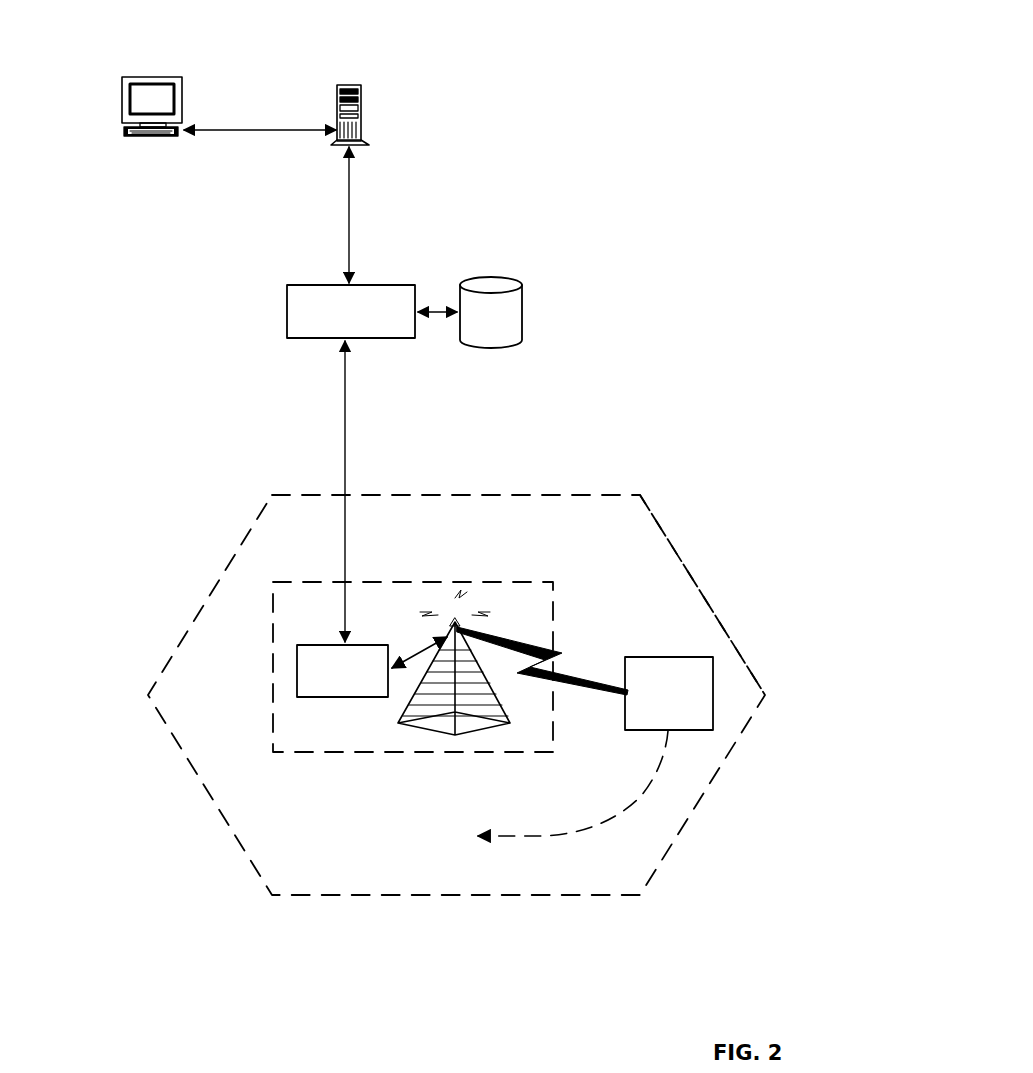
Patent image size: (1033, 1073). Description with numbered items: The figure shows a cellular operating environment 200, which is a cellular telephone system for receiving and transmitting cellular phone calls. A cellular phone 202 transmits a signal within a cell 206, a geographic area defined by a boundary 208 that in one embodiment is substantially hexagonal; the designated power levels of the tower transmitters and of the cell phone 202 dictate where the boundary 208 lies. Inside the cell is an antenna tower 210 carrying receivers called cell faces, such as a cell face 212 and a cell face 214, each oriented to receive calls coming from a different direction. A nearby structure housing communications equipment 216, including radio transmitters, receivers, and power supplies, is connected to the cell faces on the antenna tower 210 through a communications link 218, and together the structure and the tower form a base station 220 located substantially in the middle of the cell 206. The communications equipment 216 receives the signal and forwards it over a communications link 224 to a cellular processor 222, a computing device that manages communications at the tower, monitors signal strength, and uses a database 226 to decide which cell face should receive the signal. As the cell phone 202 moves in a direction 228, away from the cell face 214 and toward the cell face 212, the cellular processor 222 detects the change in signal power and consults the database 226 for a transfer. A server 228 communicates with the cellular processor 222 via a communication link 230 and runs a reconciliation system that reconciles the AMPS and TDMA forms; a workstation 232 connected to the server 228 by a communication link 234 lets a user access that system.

The operating environment 200 is at (636, 106).
The cellular phone 202 is at (712, 677).
The cell 206 is at (290, 540).
The boundary 208 is at (676, 540).
The antenna tower 210 is at (447, 716).
The cell face 212 is at (450, 625).
The cell face 214 is at (456, 625).
The communications equipment 216 is at (343, 698).
The communications link 218 is at (428, 650).
The base station 220 is at (270, 625).
The cellular processor 222 is at (287, 300).
The communications link 224 is at (343, 417).
The database 226 is at (522, 312).
The server 228 is at (362, 108).
The communication link 230 is at (350, 222).
The workstation 232 is at (120, 107).
The communication link 234 is at (263, 131).